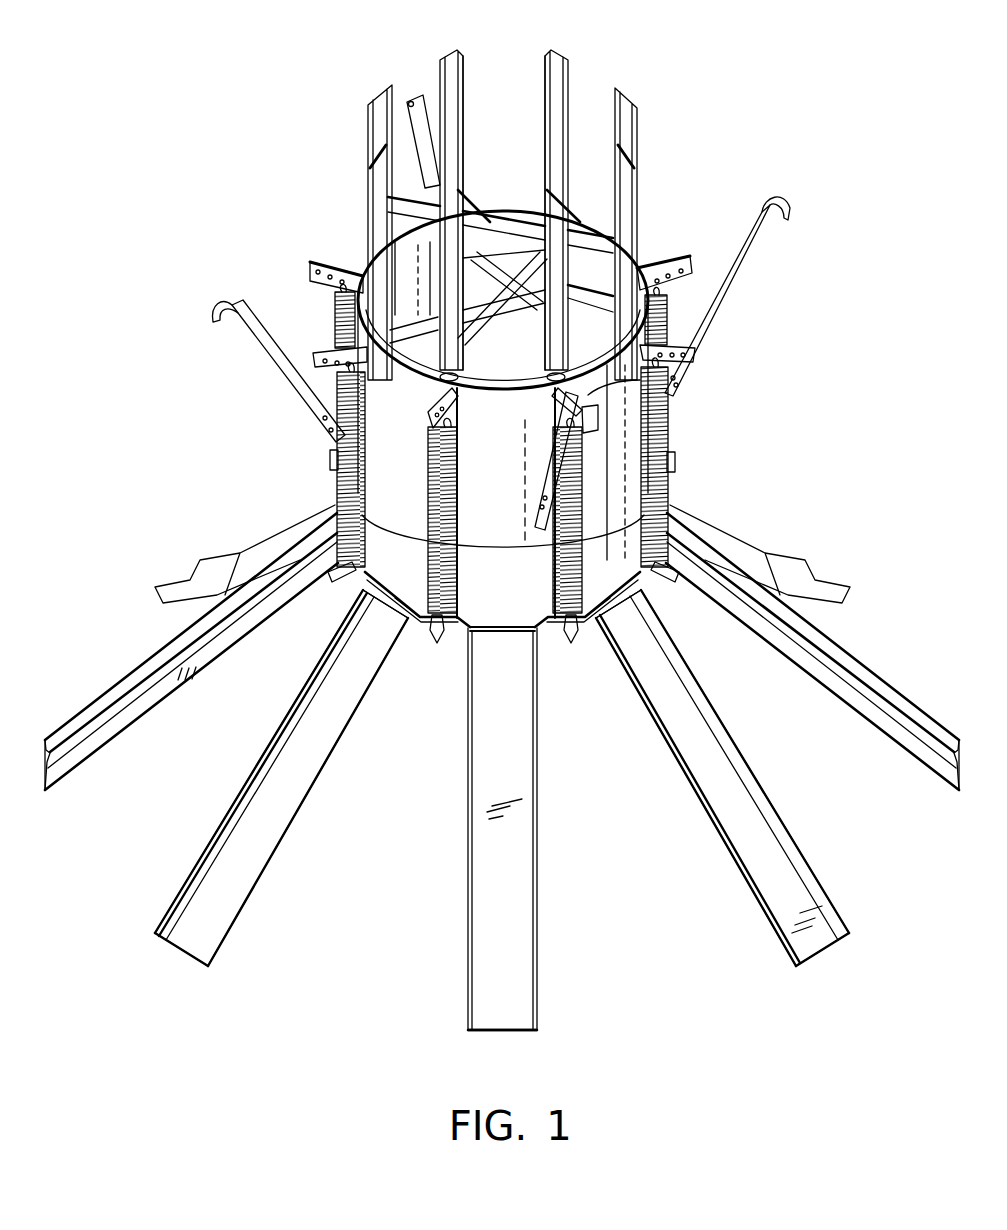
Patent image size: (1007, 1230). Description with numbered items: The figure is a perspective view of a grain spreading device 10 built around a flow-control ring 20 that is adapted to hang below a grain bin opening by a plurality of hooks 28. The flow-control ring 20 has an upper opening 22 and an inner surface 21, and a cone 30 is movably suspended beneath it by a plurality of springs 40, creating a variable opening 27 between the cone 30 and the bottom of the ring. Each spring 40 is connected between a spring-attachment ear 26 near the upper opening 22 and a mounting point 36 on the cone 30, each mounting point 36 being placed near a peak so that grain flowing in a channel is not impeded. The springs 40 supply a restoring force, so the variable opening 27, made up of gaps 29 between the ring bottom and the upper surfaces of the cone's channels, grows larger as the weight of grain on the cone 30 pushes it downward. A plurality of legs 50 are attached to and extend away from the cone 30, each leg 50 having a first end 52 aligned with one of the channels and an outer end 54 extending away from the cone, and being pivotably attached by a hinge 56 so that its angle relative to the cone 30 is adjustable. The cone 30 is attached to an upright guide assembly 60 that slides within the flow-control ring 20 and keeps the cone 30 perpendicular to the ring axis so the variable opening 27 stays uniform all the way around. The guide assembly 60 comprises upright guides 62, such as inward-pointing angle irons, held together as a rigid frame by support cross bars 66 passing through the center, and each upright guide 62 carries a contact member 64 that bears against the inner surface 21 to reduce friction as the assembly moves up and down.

The grain spreading device 10 is at (730, 76).
The flow-control ring 20 is at (403, 273).
The inner surface 21 is at (405, 275).
The upper opening 22 is at (585, 242).
The spring-attachment ear 26 is at (310, 268).
The variable opening 27 is at (533, 622).
The hooks 28 is at (408, 100).
The gaps 29 is at (357, 600).
The cone 30 is at (520, 600).
The mounting point 36 is at (332, 566).
The springs 40 is at (335, 480).
The legs 50 is at (178, 588).
The first end 52 is at (352, 592).
The leg foot end 54 is at (82, 790).
The hinge 56 is at (402, 602).
The upright guide assembly 60 is at (570, 47).
The upright guides 62 is at (612, 192).
The contact member 64 is at (650, 320).
The support cross bars 66 is at (520, 250).